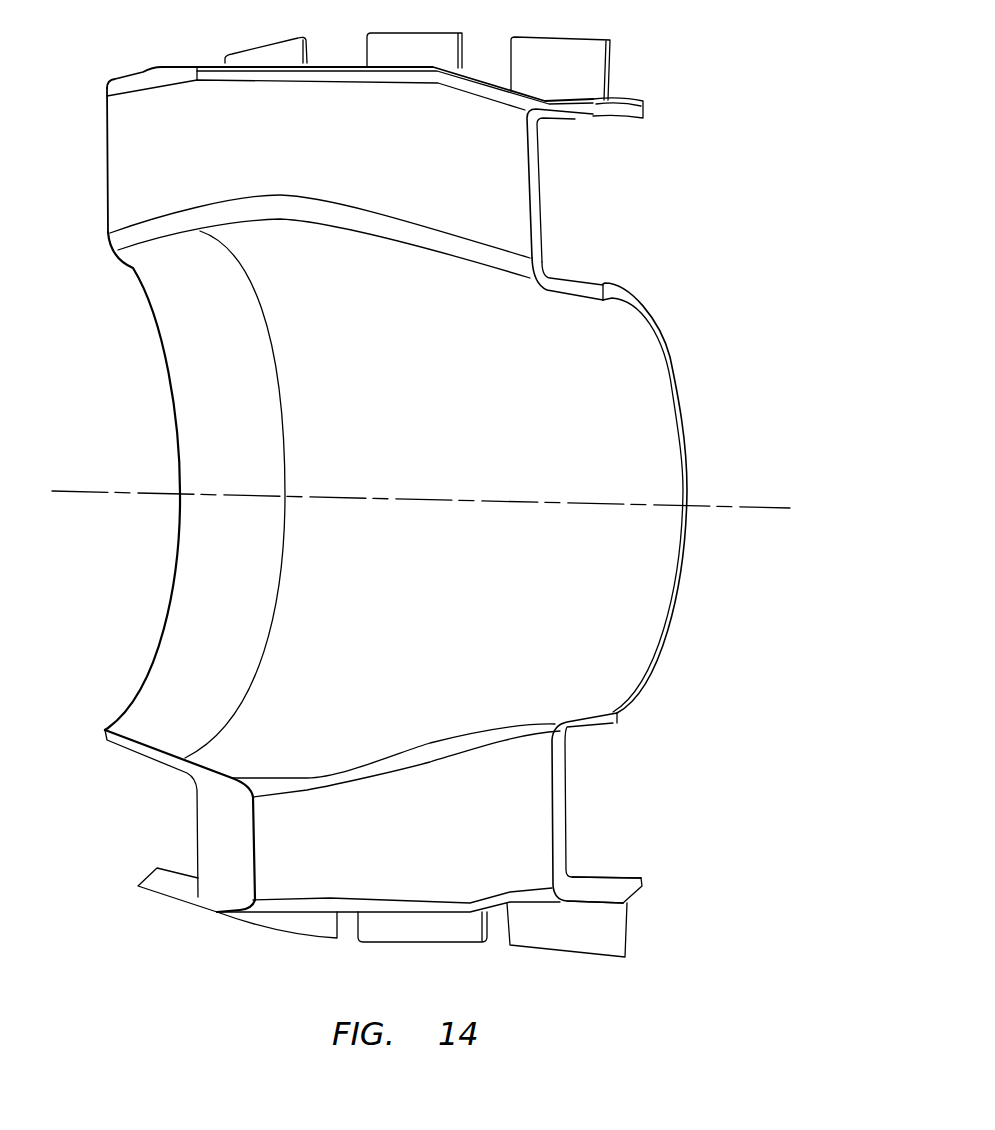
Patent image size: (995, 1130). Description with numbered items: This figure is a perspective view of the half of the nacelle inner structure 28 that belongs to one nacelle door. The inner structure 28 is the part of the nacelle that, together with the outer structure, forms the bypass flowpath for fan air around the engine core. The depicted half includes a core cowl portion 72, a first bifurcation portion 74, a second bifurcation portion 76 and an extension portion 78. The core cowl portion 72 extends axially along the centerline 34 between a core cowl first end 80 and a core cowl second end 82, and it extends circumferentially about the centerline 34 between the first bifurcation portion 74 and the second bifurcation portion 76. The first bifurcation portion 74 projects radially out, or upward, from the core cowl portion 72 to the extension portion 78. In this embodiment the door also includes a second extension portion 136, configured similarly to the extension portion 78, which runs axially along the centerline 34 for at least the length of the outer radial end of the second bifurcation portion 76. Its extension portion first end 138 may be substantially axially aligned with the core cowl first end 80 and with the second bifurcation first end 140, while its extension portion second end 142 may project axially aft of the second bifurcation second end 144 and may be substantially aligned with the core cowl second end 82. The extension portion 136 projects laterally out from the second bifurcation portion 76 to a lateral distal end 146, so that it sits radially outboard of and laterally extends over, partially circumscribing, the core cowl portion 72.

The nacelle inner structure 28 is at (720, 91).
The centerline 34 is at (83, 493).
The core cowl portion 72 is at (682, 435).
The first bifurcation portion 74 is at (537, 217).
The second bifurcation portion 76 is at (558, 777).
The extension portion 78 is at (575, 120).
The core cowl first end 80 is at (680, 597).
The core cowl second end 82 is at (163, 622).
The extension portion 136 is at (618, 882).
The extension portion first end 138 is at (633, 897).
The second bifurcation first end 140 is at (567, 822).
The extension portion second end 142 is at (137, 883).
The second bifurcation second end 144 is at (197, 842).
The lateral distal end 146 is at (640, 887).